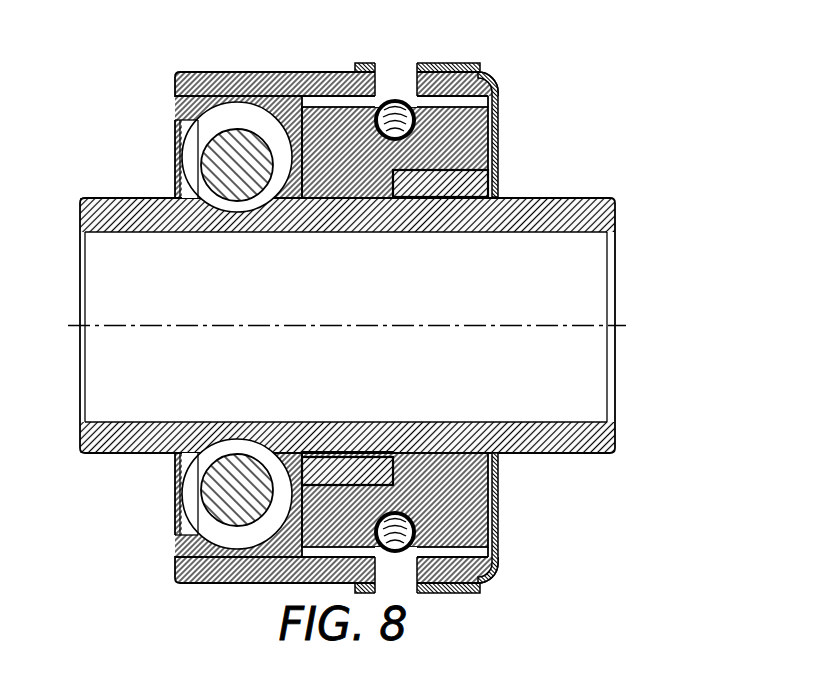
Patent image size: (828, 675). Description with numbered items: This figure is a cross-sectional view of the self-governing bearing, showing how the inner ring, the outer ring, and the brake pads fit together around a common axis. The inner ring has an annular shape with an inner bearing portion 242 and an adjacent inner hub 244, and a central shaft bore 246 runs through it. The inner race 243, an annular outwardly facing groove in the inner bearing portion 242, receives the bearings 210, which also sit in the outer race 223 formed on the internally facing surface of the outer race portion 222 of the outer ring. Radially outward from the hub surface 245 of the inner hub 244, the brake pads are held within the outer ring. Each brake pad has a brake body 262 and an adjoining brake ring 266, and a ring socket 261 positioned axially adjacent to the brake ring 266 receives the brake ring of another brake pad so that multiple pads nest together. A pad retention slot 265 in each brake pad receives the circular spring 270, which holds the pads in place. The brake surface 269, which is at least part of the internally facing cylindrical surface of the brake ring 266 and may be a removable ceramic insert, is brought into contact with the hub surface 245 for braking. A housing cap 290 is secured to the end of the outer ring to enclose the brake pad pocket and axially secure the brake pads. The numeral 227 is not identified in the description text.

The bearings 210 is at (222, 150).
The outer race portion 222 is at (230, 78).
The outer race 223 is at (220, 108).
The lower seal channel 227 is at (290, 473).
The inner bearing portion 242 is at (137, 215).
The inner race 243 is at (237, 215).
The inner hub 244 is at (583, 207).
The hub surface 245 is at (466, 190).
The shaft bore 246 is at (580, 298).
The ring socket 261 is at (494, 99).
The brake body 262 is at (342, 143).
The pad retention slot 265 is at (373, 120).
The brake ring 266 is at (423, 177).
The brake surface 269 is at (446, 204).
The circular spring 270 is at (395, 100).
The housing cap 290 is at (499, 160).